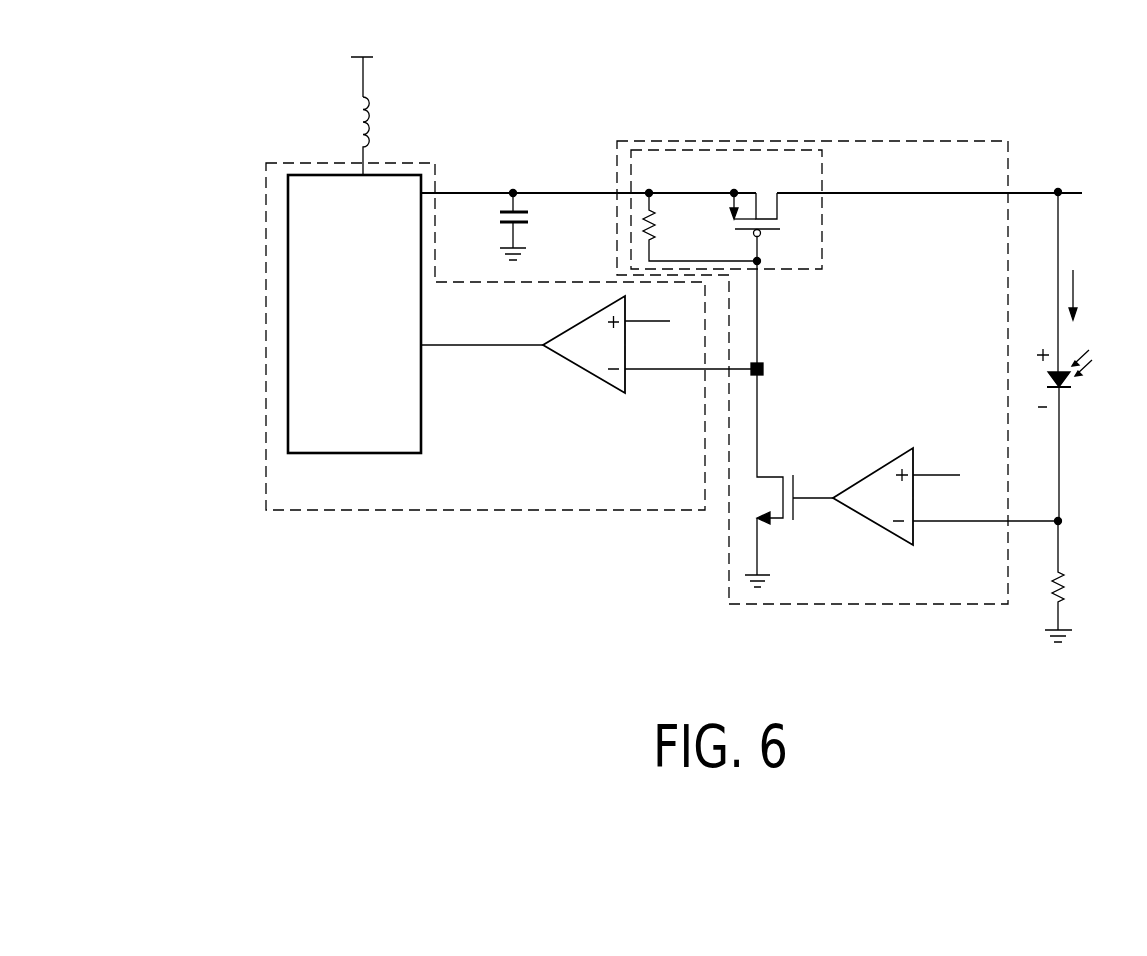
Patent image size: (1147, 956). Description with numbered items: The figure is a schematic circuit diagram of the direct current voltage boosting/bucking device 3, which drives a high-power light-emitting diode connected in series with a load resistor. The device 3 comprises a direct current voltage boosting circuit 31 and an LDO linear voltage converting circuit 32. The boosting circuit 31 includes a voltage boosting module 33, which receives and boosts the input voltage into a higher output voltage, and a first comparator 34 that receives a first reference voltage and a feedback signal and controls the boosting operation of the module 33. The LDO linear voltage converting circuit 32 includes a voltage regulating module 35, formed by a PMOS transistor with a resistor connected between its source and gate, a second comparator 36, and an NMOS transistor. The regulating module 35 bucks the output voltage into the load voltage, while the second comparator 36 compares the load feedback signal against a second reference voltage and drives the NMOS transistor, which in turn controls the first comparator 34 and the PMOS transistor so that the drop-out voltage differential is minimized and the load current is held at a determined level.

The direct current voltage boosting/bucking device 3 is at (752, 101).
The direct current voltage boosting circuit 31 is at (250, 296).
The LDO linear voltage converting circuit 32 is at (922, 150).
The voltage boosting module 33 is at (333, 175).
The first comparator 34 is at (582, 353).
The voltage regulating module 35 is at (822, 172).
The second comparator 36 is at (875, 483).